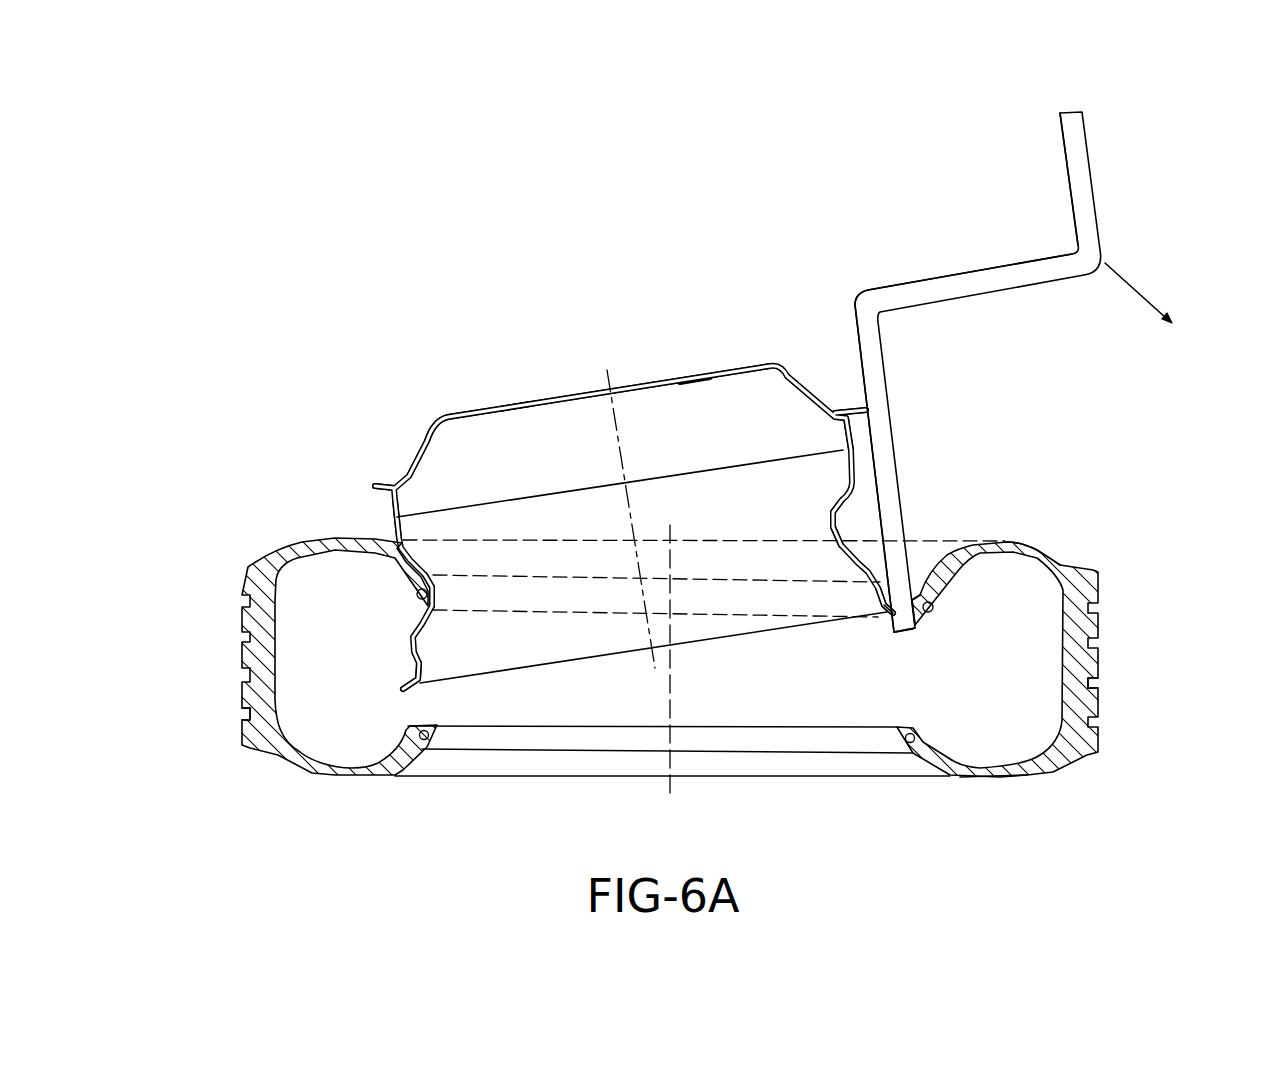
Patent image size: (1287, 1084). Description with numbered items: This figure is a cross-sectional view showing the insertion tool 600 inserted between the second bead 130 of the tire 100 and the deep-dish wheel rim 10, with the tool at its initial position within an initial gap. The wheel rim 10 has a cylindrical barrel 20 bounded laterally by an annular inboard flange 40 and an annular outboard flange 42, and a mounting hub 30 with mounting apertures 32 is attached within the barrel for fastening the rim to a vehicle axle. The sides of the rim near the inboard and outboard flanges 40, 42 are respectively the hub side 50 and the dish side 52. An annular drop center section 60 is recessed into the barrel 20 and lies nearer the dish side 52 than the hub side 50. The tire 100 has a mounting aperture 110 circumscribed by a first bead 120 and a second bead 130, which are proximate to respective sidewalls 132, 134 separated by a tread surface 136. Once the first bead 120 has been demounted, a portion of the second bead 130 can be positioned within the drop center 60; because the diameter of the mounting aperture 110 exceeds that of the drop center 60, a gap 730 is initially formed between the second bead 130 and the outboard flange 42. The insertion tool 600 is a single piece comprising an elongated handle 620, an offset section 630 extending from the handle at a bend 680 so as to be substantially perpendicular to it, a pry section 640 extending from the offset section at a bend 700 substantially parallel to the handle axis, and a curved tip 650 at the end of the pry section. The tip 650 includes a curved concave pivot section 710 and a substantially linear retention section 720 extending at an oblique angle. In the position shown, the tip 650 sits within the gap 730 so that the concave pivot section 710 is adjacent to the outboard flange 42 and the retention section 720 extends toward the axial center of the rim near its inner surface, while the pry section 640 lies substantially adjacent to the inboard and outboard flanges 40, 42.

The deep-dish wheel rim 10 is at (437, 411).
The barrel 20 is at (395, 515).
The mounting hub 30 is at (742, 367).
The mounting apertures 32 is at (516, 406).
The inboard flange 40 is at (372, 492).
The outboard flange 42 is at (413, 683).
The hub side 50 is at (393, 473).
The dish side 52 is at (467, 683).
The drop center section 60 is at (423, 595).
The tire 100 is at (1090, 754).
The mounting aperture 110 is at (800, 730).
The first bead 120 is at (422, 732).
The second bead 130 is at (420, 598).
The tire sidewall 132 is at (998, 780).
The tire sidewall 134 is at (1030, 540).
The tread surface 136 is at (240, 723).
The insertion tool 600 is at (1100, 132).
The handle 620 is at (1094, 190).
The offset section 630 is at (988, 263).
The pry section 640 is at (893, 428).
The curved tip 650 is at (915, 632).
The bend 680 is at (1088, 268).
The bend 700 is at (860, 297).
The concave pivot section 710 is at (888, 622).
The retention section 720 is at (913, 640).
The gap 730 is at (928, 567).